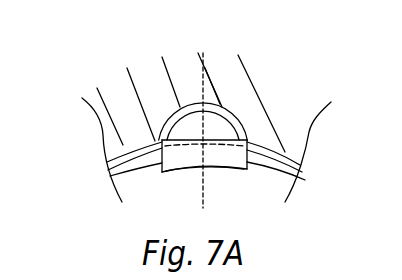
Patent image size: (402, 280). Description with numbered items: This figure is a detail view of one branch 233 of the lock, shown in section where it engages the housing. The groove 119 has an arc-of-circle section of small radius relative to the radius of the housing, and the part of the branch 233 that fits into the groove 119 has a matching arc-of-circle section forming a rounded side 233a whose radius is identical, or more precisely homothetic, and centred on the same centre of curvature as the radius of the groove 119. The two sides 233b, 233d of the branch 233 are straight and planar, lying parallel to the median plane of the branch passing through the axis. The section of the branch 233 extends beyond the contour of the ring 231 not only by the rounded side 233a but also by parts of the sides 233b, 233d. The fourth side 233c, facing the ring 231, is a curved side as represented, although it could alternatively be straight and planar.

The groove 119 is at (224, 108).
The ring 231 is at (160, 196).
The branch 233 is at (204, 130).
The rounded side 233a is at (237, 138).
The side 233b is at (298, 183).
The fourth side 233c is at (188, 171).
The side 233d is at (117, 173).